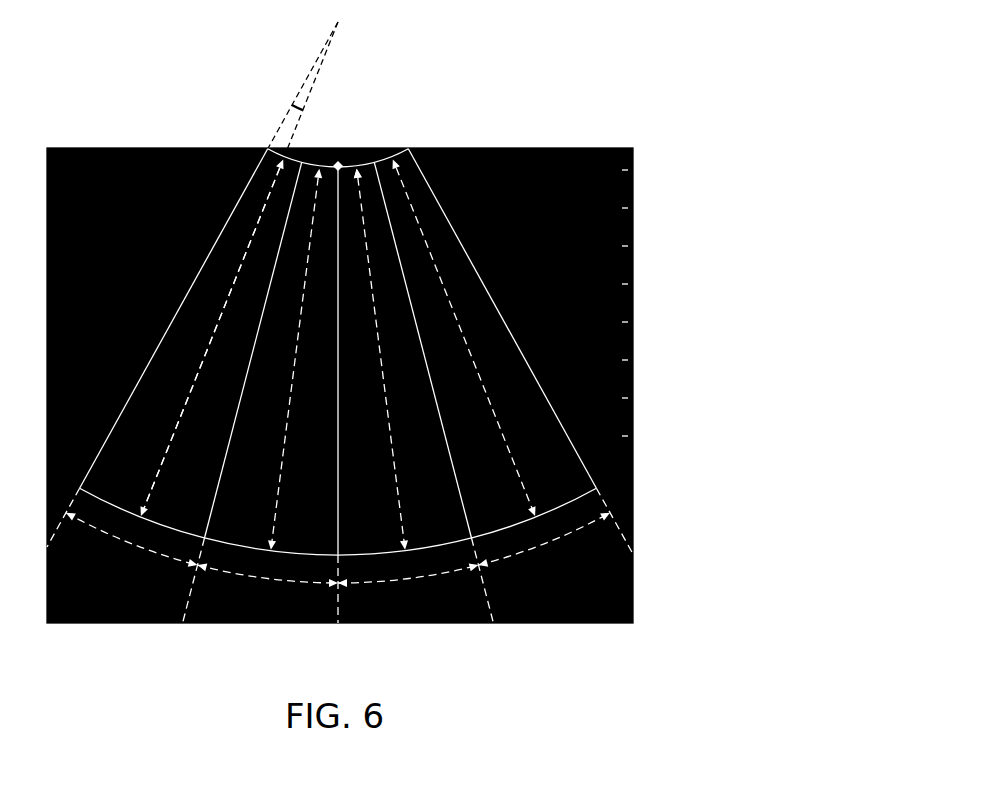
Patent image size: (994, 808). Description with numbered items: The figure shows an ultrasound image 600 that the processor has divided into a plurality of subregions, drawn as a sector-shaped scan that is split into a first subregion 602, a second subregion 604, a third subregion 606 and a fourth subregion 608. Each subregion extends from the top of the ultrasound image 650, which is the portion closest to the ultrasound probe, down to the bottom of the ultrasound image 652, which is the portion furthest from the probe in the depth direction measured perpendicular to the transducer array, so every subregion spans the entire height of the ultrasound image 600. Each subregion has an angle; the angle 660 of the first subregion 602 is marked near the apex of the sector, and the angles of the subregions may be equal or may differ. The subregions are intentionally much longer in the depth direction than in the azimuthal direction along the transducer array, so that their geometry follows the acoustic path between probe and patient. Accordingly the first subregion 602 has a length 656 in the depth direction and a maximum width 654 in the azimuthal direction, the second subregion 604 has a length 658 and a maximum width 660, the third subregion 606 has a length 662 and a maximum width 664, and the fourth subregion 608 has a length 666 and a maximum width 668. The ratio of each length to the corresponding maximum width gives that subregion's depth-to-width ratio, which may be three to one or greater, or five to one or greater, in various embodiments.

The ultrasound image 600 is at (445, 200).
The first subregion 602 is at (144, 475).
The second subregion 604 is at (268, 525).
The third subregion 606 is at (392, 531).
The fourth subregion 608 is at (516, 503).
The top of the ultrasound image 650 is at (428, 175).
The bottom of the ultrasound image 652 is at (598, 488).
The maximum width 654 is at (128, 546).
The length 656 is at (236, 272).
The length 658 is at (330, 165).
The angle 660 is at (300, 100).
The length 662 is at (370, 167).
The maximum width 664 is at (408, 577).
The length 666 is at (418, 158).
The maximum width 668 is at (556, 542).